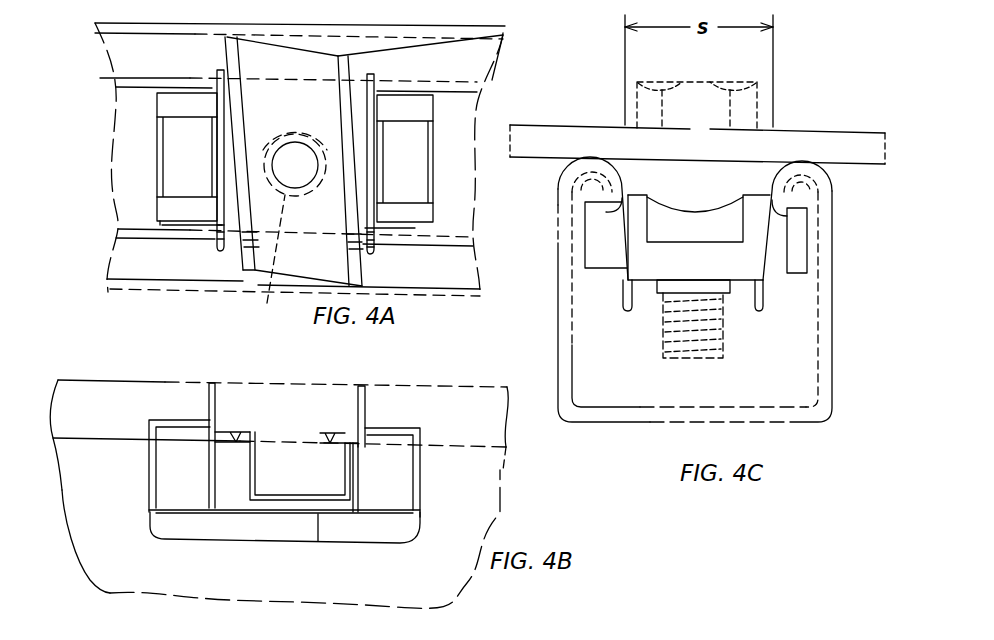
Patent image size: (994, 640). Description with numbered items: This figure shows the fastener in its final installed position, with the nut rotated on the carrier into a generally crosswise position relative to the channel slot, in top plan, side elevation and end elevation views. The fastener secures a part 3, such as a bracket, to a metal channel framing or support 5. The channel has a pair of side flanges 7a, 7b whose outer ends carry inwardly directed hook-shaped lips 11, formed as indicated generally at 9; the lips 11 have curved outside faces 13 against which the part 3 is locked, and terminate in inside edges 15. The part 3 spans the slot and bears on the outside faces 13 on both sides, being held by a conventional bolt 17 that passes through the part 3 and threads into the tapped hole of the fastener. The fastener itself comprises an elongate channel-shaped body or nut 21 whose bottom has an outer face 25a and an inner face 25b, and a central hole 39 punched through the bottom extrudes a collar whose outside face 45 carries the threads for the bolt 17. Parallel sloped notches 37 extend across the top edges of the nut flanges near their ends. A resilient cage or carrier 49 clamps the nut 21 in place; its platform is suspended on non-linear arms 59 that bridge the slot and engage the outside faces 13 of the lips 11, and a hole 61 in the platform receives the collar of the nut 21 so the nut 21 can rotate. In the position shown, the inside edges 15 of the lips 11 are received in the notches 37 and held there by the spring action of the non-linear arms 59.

In FIG. 4C, the part 3 is at (553, 125).
In FIG. 4A, the metal channel framing or support 5 is at (358, 161).
In FIG. 4B, the metal channel framing or support 5 is at (313, 475).
In FIG. 4C, the metal channel framing or support 5 is at (555, 335).
In FIG. 4C, the side flange 7a is at (556, 302).
In FIG. 4C, the side flange 7b is at (831, 350).
In FIG. 4A, the lip formation 9 is at (493, 73).
In FIG. 4B, the lip formation 9 is at (508, 446).
In FIG. 4C, the lips 11 is at (588, 157).
In FIG. 4C, the outside faces 13 is at (560, 178).
In FIG. 4B, the inside edges 15 is at (112, 440).
In FIG. 4C, the inside edges 15 is at (573, 246).
In FIG. 4C, the bolt 17 is at (758, 92).
In FIG. 4A, the body or nut 21 is at (349, 64).
In FIG. 4B, the body or nut 21 is at (247, 430).
In FIG. 4C, the body or nut 21 is at (747, 227).
In FIG. 4B, the outer face 25a is at (272, 492).
In FIG. 4B, the inner face 25b is at (318, 542).
In FIG. 4C, the inner face 25b is at (781, 298).
In FIG. 4B, the grooves or notches 37 is at (232, 440).
In FIG. 4C, the grooves or notches 37 is at (610, 218).
In FIG. 4A, the hole 39 is at (281, 140).
In FIG. 4A, the outside face 45 is at (259, 258).
In FIG. 4A, the cage or carrier 49 is at (385, 92).
In FIG. 4B, the cage or carrier 49 is at (371, 386).
In FIG. 4A, the non-linear arms 59 is at (184, 95).
In FIG. 4B, the non-linear arms 59 is at (179, 416).
In FIG. 4C, the non-linear arms 59 is at (704, 197).
In FIG. 4A, the hole 61 is at (238, 254).